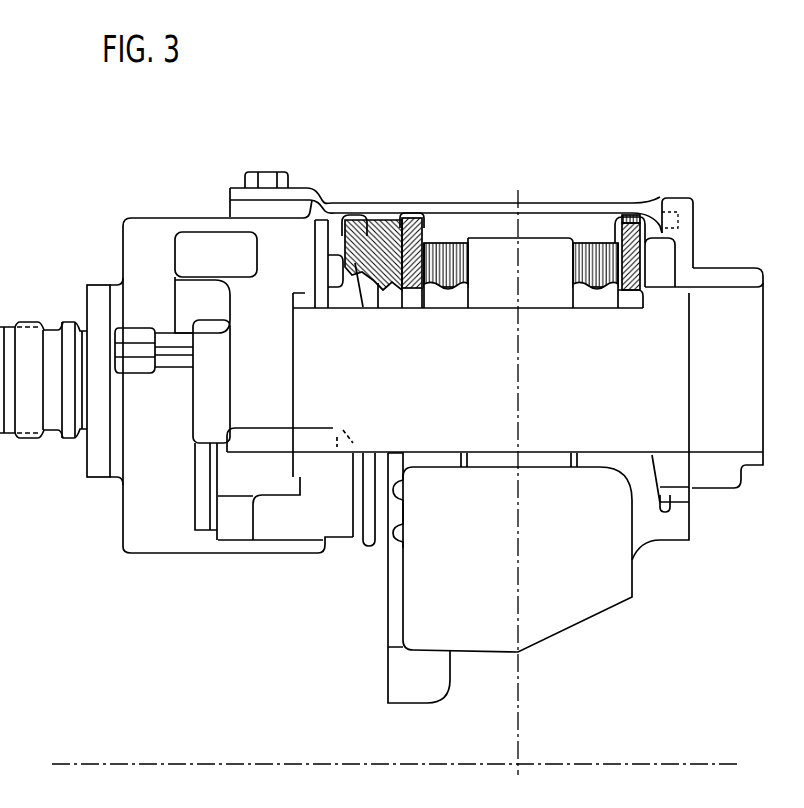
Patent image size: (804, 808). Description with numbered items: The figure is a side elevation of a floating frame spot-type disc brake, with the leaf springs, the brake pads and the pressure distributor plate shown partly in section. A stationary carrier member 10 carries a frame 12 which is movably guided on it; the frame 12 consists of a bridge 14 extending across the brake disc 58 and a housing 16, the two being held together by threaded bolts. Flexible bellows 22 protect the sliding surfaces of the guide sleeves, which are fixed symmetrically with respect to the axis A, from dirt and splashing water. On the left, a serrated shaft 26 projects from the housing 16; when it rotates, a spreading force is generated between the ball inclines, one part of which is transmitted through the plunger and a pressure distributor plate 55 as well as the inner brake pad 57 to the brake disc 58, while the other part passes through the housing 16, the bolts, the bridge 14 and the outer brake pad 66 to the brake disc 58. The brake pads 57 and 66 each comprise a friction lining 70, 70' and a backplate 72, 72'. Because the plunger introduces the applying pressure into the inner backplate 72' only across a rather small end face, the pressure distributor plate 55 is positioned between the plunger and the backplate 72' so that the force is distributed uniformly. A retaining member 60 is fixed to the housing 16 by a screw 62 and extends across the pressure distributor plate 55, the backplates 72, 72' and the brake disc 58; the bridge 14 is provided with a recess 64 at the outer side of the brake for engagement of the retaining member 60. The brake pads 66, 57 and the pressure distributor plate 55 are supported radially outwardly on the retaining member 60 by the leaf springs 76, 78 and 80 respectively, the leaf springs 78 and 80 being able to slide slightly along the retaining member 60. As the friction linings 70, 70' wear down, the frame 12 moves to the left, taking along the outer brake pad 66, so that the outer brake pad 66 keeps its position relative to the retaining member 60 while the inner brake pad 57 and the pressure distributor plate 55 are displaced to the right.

The carrier member 10 is at (613, 587).
The frame 12 is at (219, 564).
The bridge 14 is at (734, 335).
The housing 16 is at (142, 532).
The flexible bellows 22 is at (368, 548).
The serrated shaft 26 is at (39, 449).
The pressure distributor plate 55 is at (387, 297).
The inner brake pad 57 is at (440, 240).
The brake disc 58 is at (552, 293).
The retaining member 60 is at (316, 199).
The screw 62 is at (268, 180).
The recess 64 is at (661, 198).
The outer brake pad 66 is at (599, 234).
The friction lining 70 is at (591, 302).
The friction lining 70' is at (459, 300).
The backplate 72 is at (415, 325).
The backplate 72' is at (639, 326).
The leaf spring 76 is at (618, 218).
The leaf spring 78 is at (408, 216).
The leaf spring 80 is at (353, 220).
The axis A is at (606, 764).